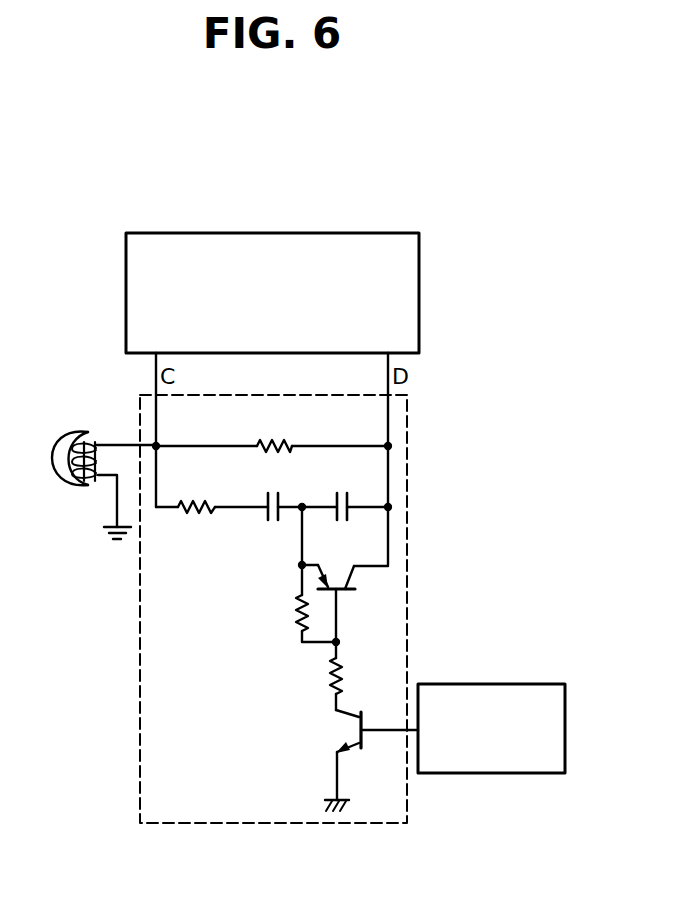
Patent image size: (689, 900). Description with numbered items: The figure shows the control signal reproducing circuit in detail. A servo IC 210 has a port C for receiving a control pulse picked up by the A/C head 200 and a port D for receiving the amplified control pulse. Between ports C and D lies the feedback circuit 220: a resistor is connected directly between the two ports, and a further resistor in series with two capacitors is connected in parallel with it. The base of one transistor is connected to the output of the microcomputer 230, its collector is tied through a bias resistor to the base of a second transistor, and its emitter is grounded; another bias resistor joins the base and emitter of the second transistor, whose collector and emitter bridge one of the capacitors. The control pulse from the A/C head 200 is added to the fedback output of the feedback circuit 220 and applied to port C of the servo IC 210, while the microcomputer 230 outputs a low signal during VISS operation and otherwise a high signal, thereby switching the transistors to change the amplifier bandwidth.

The A/C head 200 is at (76, 431).
The servo IC 210 is at (279, 232).
The feedback circuit 220 is at (407, 582).
The microcomputer 230 is at (458, 683).